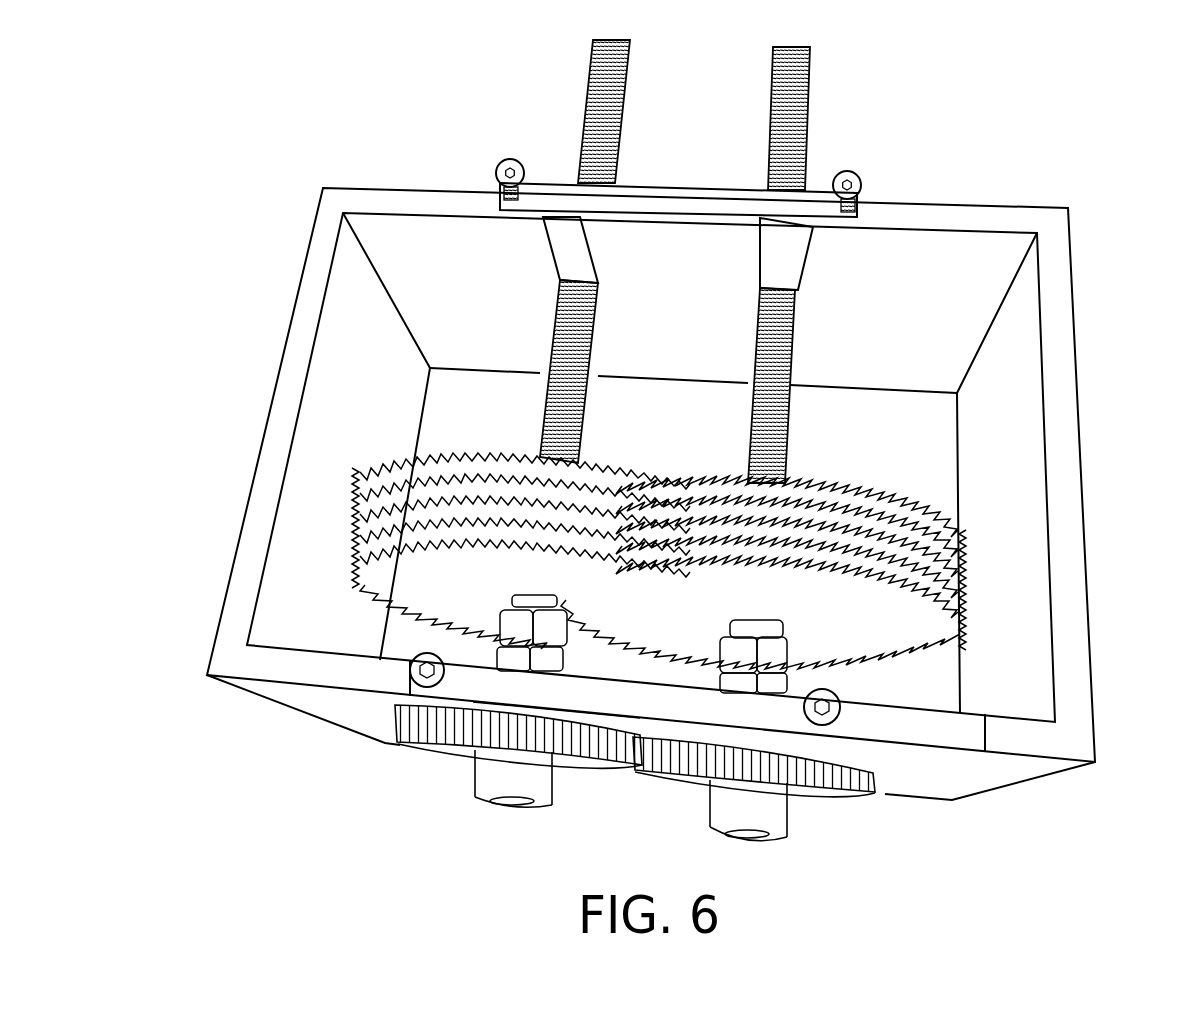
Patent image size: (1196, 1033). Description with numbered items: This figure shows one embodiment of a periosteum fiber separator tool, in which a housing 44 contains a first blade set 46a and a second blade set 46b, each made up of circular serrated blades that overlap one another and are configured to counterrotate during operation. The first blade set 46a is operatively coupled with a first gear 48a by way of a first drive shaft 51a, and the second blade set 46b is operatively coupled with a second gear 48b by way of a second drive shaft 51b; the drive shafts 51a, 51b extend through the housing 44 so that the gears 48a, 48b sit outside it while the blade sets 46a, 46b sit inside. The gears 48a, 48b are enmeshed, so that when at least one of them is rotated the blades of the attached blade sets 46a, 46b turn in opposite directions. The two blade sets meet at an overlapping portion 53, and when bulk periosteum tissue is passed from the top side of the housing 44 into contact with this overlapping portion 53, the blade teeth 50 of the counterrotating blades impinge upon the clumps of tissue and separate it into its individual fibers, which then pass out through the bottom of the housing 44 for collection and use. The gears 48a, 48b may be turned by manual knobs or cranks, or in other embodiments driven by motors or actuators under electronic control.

The housing 44 is at (1060, 447).
The first blade set 46a is at (859, 555).
The second blade set 46b is at (430, 485).
The first gear 48a is at (877, 783).
The second gear 48b is at (397, 728).
The blade teeth 50 is at (465, 394).
The first drive shaft 51a is at (807, 63).
The second drive shaft 51b is at (630, 62).
The overlapping portion 53 is at (690, 473).